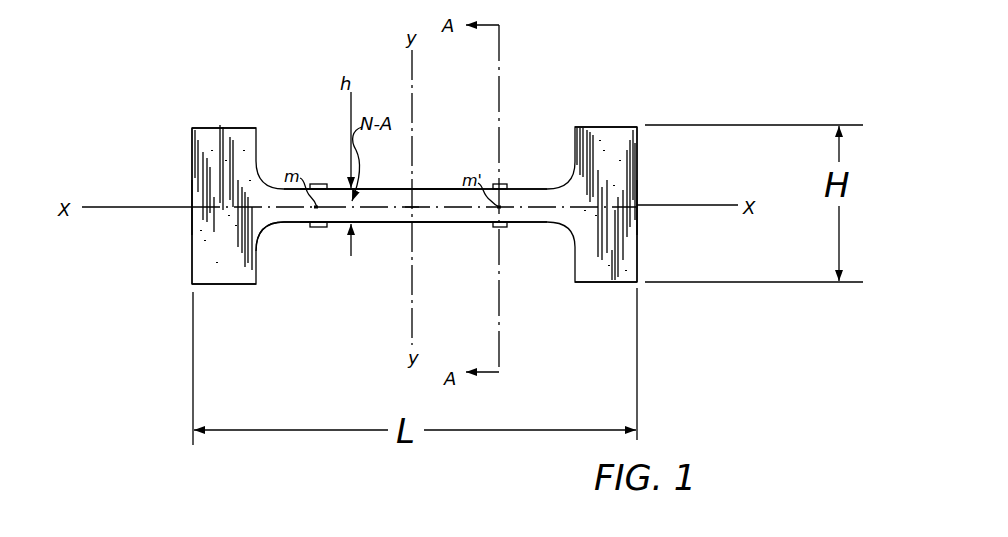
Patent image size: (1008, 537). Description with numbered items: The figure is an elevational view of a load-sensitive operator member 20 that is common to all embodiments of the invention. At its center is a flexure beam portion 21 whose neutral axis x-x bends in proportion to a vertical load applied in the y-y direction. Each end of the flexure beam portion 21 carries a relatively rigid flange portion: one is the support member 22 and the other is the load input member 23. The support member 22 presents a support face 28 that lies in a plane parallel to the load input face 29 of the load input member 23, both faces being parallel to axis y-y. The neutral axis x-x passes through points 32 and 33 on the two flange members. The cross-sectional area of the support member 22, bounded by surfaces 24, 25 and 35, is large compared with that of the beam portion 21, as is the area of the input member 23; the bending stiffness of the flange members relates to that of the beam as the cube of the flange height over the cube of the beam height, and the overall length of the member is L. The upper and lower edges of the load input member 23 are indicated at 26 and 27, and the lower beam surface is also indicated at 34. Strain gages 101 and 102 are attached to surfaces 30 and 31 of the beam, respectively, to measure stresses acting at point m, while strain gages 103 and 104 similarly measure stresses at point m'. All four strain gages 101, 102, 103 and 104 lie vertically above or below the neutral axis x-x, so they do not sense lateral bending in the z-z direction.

The load-sensitive operator member 20 is at (508, 126).
The flexure beam portion 21 is at (423, 200).
The support member 22 is at (207, 250).
The load input member 23 is at (622, 218).
The surface of support member 24 is at (222, 127).
The surface of support member 25 is at (204, 285).
The top face of right flange 26 is at (588, 126).
The bottom face of right flange 27 is at (608, 284).
The support face 28 is at (190, 175).
The load input face 29 is at (639, 157).
The surface 30 is at (386, 189).
The surface 31 is at (470, 223).
The point 32 is at (191, 207).
The point 33 is at (639, 201).
The lower web surface portion 34 is at (400, 222).
The surface of support member 35 is at (264, 236).
The strain gage 101 is at (318, 184).
The strain gage 102 is at (321, 227).
The strain gage 103 is at (500, 184).
The strain gage 104 is at (502, 227).